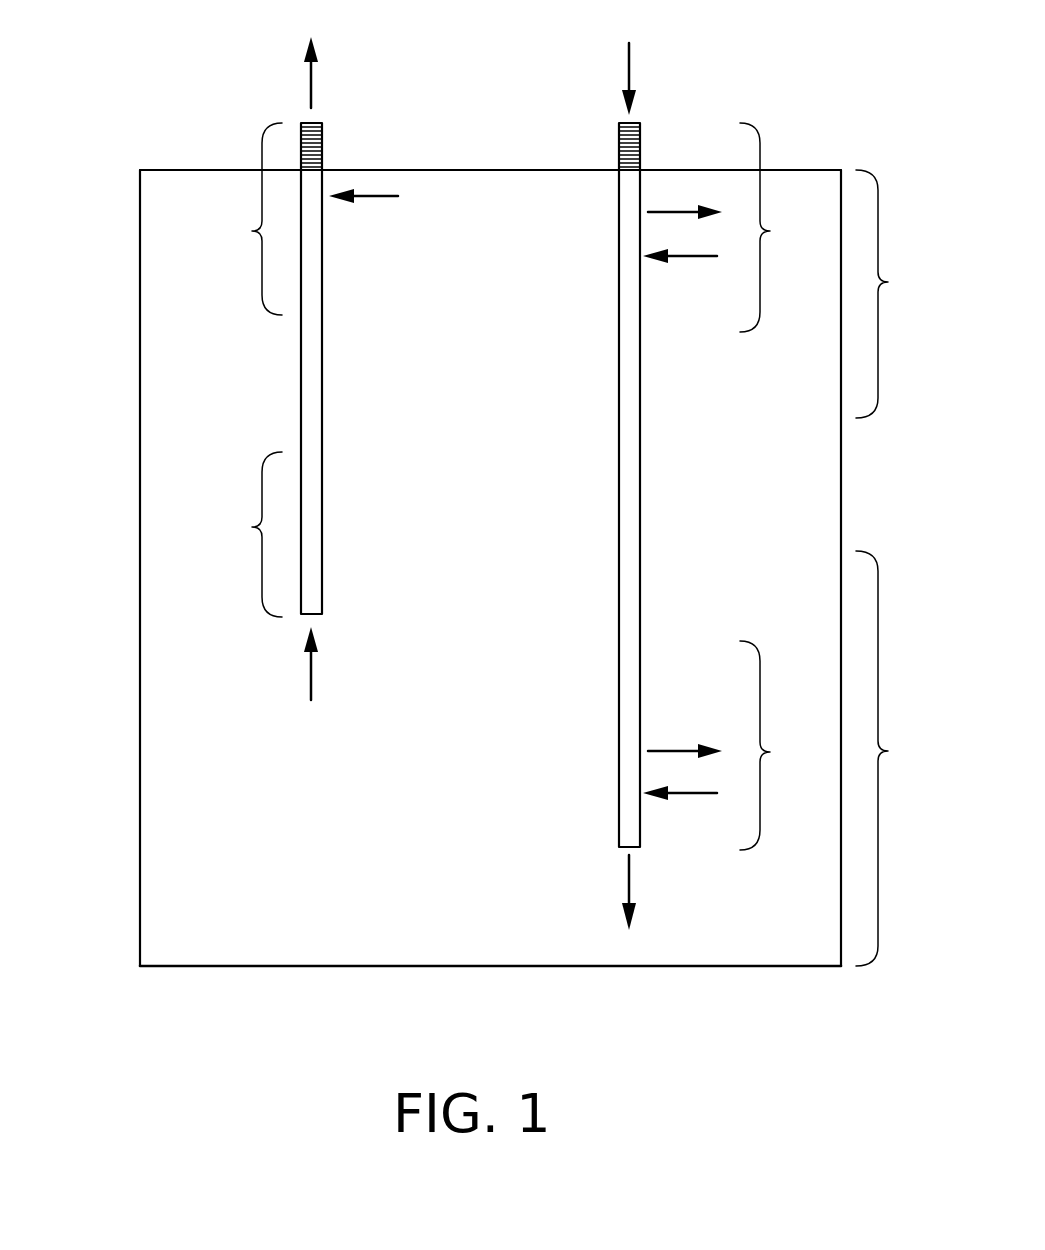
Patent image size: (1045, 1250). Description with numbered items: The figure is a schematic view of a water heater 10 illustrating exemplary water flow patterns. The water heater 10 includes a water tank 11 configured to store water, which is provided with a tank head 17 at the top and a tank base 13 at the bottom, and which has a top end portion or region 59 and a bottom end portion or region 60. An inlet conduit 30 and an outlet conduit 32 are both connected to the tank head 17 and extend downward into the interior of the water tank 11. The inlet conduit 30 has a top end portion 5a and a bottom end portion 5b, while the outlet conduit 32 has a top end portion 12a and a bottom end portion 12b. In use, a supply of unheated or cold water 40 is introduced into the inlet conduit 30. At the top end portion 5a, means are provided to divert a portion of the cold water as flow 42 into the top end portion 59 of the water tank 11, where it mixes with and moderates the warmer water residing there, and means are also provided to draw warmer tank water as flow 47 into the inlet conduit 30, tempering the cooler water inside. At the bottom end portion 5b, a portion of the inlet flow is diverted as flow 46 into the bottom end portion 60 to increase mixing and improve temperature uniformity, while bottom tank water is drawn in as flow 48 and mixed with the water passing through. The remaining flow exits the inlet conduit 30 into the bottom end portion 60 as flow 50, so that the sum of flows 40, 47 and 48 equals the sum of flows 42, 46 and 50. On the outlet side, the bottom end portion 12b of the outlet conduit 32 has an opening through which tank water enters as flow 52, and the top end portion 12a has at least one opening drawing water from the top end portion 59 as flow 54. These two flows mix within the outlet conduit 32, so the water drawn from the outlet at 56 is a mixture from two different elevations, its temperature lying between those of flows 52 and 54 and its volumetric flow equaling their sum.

The water heater 10 is at (123, 148).
The water tank 11 is at (140, 748).
The tank base 13 is at (455, 966).
The tank head 17 is at (478, 170).
The inlet conduit 30 is at (640, 518).
The outlet conduit 32 is at (301, 375).
The top end portion of outlet conduit 12a is at (231, 219).
The bottom end portion of outlet conduit 12b is at (231, 534).
The top end portion of inlet conduit 5a is at (778, 227).
The bottom end portion of inlet conduit 5b is at (779, 745).
The top end portion of water tank 59 is at (893, 294).
The bottom end portion of water tank 60 is at (893, 758).
The cold water supply flow 40 is at (629, 62).
The diverted cold water flow 42 is at (668, 212).
The diverted water flow at bottom 46 is at (670, 751).
The siphoned water flow into inlet top 47 is at (684, 256).
The siphoned water flow into inlet bottom 48 is at (684, 793).
The remaining inlet flow 50 is at (629, 870).
The siphoned water flow into outlet bottom 52 is at (343, 663).
The siphoned water flow into outlet top 54 is at (372, 196).
The outlet water flow 56 is at (311, 83).